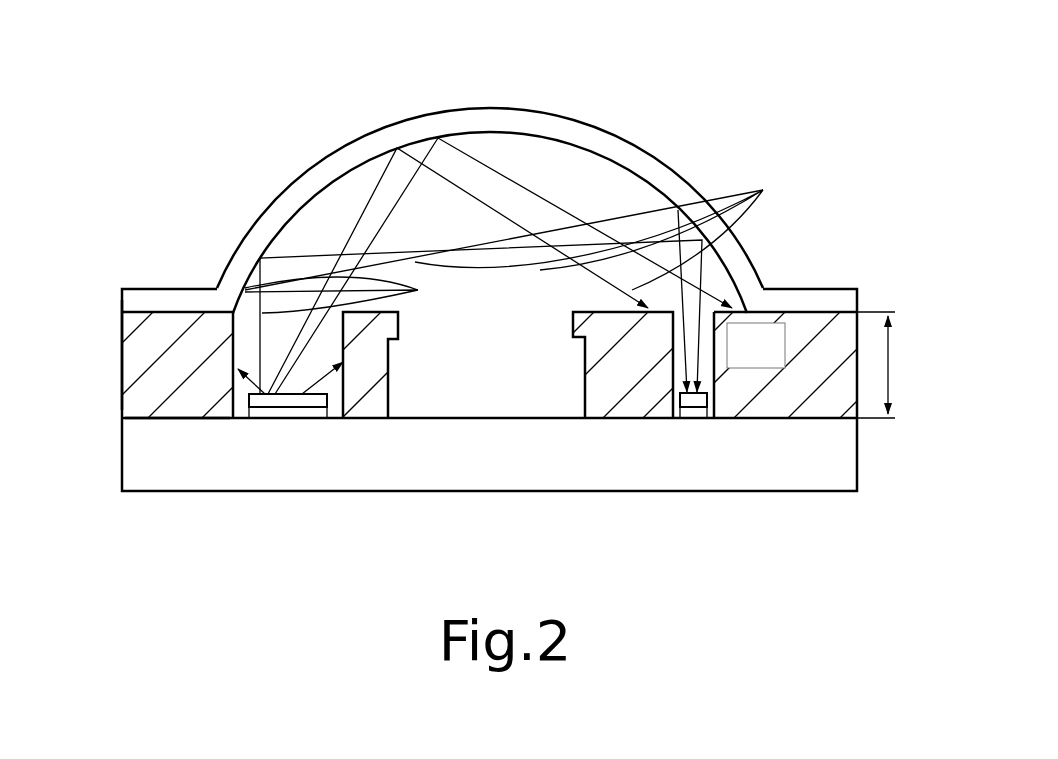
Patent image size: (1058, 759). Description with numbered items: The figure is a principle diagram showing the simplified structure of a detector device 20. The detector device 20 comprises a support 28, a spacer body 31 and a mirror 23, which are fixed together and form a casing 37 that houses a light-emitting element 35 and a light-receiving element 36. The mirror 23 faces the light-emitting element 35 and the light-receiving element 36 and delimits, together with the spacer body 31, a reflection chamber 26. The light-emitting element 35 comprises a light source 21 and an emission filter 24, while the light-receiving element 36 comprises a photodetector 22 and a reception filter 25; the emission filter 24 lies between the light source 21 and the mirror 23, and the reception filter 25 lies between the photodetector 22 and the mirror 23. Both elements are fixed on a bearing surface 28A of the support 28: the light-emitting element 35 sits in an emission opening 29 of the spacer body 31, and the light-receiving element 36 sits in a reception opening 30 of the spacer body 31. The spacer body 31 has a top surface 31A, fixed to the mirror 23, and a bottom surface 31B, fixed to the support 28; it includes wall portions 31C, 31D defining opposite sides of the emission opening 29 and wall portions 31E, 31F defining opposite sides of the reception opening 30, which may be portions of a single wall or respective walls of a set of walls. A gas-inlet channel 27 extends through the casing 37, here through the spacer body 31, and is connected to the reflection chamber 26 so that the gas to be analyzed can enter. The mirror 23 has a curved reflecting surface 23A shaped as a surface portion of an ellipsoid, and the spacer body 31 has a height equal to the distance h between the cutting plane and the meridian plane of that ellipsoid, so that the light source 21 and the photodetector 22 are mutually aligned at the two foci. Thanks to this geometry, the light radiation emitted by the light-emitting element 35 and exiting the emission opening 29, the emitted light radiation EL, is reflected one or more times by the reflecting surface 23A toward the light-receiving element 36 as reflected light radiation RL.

The detector device 20 is at (742, 105).
The light source 21 is at (275, 411).
The photodetector 22 is at (693, 412).
The mirror 23 is at (528, 120).
The reflecting surface 23A is at (315, 203).
The emission filter 24 is at (267, 407).
The reception filter 25 is at (704, 398).
The reflection chamber 26 is at (577, 175).
The gas-inlet channel 27 is at (471, 369).
The support 28 is at (775, 465).
The bearing surface 28A is at (133, 412).
The emission opening 29 is at (335, 410).
The reception opening 30 is at (708, 354).
The spacer body 31 is at (140, 360).
The top surface 31A is at (150, 307).
The bottom surface 31B is at (140, 423).
The wall portion 31C is at (208, 405).
The wall portion 31D is at (377, 405).
The wall portion 31E is at (600, 395).
The wall portion 31F is at (762, 412).
The light-emitting element 35 is at (334, 396).
The light-receiving element 36 is at (678, 405).
The casing 37 is at (118, 343).
The emitted light radiation EL is at (348, 295).
The reflected light radiation RL is at (521, 283).
The distance h is at (883, 365).